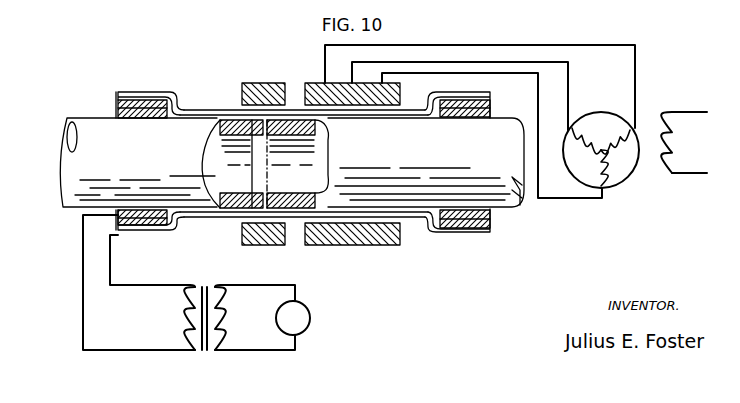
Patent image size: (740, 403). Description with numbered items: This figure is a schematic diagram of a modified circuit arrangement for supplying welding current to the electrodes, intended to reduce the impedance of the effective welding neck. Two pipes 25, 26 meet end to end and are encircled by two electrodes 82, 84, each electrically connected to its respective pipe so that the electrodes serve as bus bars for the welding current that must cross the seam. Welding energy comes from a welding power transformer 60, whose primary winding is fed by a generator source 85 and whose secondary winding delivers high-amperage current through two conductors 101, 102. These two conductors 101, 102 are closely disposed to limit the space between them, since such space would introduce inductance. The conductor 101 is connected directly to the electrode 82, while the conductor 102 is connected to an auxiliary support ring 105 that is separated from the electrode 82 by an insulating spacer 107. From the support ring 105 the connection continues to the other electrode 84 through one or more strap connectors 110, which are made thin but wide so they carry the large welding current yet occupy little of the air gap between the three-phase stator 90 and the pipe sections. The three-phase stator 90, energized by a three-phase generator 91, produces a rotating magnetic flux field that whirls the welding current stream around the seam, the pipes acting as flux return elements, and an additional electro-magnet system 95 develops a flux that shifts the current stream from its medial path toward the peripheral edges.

The pipe 25 is at (87, 157).
The pipe 26 is at (424, 167).
The welding power transformer 60 is at (199, 354).
The electrode 82 is at (117, 112).
The electrode 84 is at (460, 108).
The generator source 85 is at (310, 317).
The three-phase stator 90 is at (315, 83).
The three-phase generator 91 is at (608, 120).
The electro-magnet system 95 is at (262, 83).
The conductor 101 is at (83, 247).
The conductor 102 is at (112, 260).
The auxiliary support ring 105 is at (147, 91).
The insulating spacer 107 is at (115, 103).
The strap connector 110 is at (213, 219).